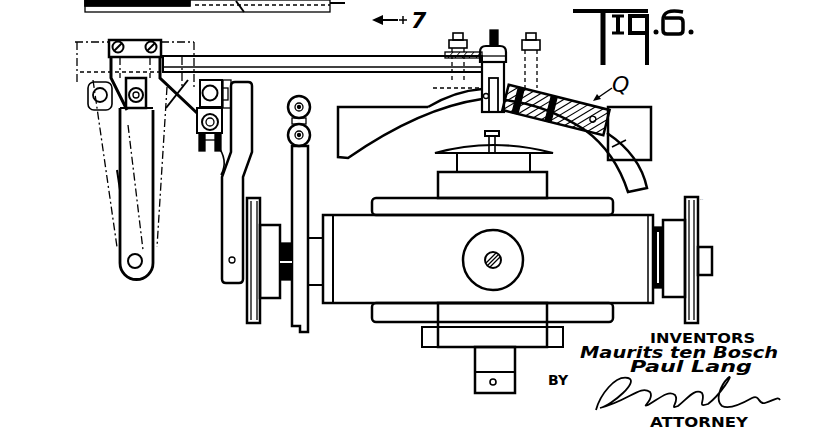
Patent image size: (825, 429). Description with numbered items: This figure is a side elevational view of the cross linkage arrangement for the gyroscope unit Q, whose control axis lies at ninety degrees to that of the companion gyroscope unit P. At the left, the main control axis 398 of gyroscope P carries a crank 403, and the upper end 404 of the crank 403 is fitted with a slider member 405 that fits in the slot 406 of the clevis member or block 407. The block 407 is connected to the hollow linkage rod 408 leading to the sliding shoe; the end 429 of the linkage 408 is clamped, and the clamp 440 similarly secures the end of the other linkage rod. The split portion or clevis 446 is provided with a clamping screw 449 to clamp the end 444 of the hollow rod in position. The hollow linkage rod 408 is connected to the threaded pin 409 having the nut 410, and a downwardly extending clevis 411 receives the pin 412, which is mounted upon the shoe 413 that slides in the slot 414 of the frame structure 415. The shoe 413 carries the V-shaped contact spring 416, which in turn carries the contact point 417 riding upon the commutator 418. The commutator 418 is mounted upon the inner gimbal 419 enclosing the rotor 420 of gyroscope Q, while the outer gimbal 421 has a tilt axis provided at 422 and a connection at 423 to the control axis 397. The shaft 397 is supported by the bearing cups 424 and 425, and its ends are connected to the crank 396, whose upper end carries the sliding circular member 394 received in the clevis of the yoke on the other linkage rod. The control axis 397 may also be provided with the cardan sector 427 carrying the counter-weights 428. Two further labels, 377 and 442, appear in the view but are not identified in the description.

The frame member 377 is at (80, 3).
The end of linkage rod 429 is at (163, 50).
The sliding circular member 394 is at (213, 90).
The hollow linkage rod 408 is at (315, 63).
The clevis member or block 407 is at (113, 62).
The slot 406 is at (110, 82).
The slider member 405 is at (127, 100).
The upper end of crank 404 is at (133, 113).
The crank 403 is at (118, 177).
The clamping screw 449 is at (200, 148).
The brace 442 is at (173, 116).
The clamp 440 is at (200, 164).
The split portion or clevis 446 is at (199, 170).
The crank 396 is at (230, 192).
The main control axis 398 is at (128, 265).
The control axis 397 is at (245, 265).
The bearing cup 424 is at (272, 225).
The cardan sector 427 is at (293, 317).
The connection 423 is at (318, 288).
The counter-weights 428 is at (311, 131).
The end of hollow rod 444 is at (220, 123).
The threaded pin 409 is at (493, 30).
The nut 410 is at (500, 47).
The downwardly extending clevis 411 is at (510, 78).
The pin 412 is at (477, 99).
The shoe 413 is at (568, 100).
The slot 414 is at (431, 100).
The frame structure 415 is at (383, 137).
The V-shaped contact spring 416 is at (555, 132).
The contact point 417 is at (492, 140).
The commutator 418 is at (457, 147).
The inner gimbal 419 is at (533, 183).
The rotor 420 is at (600, 203).
The outer gimbal 421 is at (628, 285).
The tilt axis 422 is at (500, 266).
The bearing cup 425 is at (700, 302).